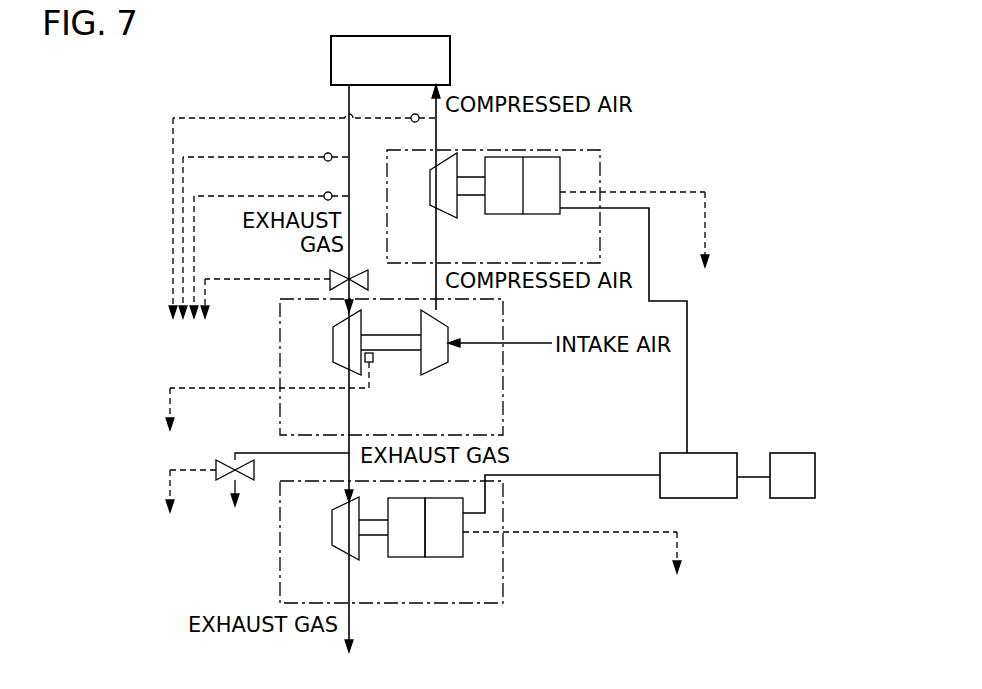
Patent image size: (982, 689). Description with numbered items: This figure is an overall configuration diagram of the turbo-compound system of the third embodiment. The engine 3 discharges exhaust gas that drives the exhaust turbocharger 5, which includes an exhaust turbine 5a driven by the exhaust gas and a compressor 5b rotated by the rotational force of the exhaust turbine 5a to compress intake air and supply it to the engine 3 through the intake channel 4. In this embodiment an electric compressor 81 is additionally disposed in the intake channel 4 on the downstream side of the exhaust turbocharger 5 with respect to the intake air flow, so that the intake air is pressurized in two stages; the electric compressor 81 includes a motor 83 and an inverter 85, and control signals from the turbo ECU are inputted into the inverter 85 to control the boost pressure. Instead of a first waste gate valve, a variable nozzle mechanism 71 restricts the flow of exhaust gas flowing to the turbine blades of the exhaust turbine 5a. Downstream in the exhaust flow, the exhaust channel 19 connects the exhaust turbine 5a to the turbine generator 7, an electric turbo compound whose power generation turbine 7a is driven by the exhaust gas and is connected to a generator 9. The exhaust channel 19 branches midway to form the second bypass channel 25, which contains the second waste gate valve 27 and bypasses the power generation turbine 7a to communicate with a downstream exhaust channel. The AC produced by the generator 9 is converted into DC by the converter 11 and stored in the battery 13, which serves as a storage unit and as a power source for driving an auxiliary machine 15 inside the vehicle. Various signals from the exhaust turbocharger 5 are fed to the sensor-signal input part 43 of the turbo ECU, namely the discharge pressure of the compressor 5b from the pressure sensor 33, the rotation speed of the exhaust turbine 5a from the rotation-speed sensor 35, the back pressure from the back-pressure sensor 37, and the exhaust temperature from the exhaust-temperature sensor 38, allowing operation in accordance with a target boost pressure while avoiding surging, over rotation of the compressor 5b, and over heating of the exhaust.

The engine 3 is at (451, 55).
The intake channel 4 is at (438, 132).
The exhaust turbocharger 5 is at (364, 367).
The exhaust turbine 5a is at (333, 366).
The compressor 5b is at (449, 365).
The turbine generator 7 is at (478, 541).
The power generation turbine 7a is at (340, 557).
The generator 9 is at (404, 558).
The converter 11 is at (441, 558).
The battery 13 is at (695, 499).
The auxiliary machine 15 is at (790, 499).
The exhaust channel 19 is at (350, 412).
The second bypass channel 25 is at (272, 456).
The second waste gate valve 27 is at (226, 460).
The pressure sensor 33 is at (411, 121).
The rotation-speed sensor 35 is at (374, 357).
The back-pressure sensor 37 is at (324, 156).
The exhaust-temperature sensor 38 is at (324, 195).
The sensor-signal input part 43 is at (216, 347).
The variable nozzle mechanism 71 is at (369, 279).
The electric compressor 81 is at (546, 301).
The motor 83 is at (502, 215).
The inverter 85 is at (540, 215).